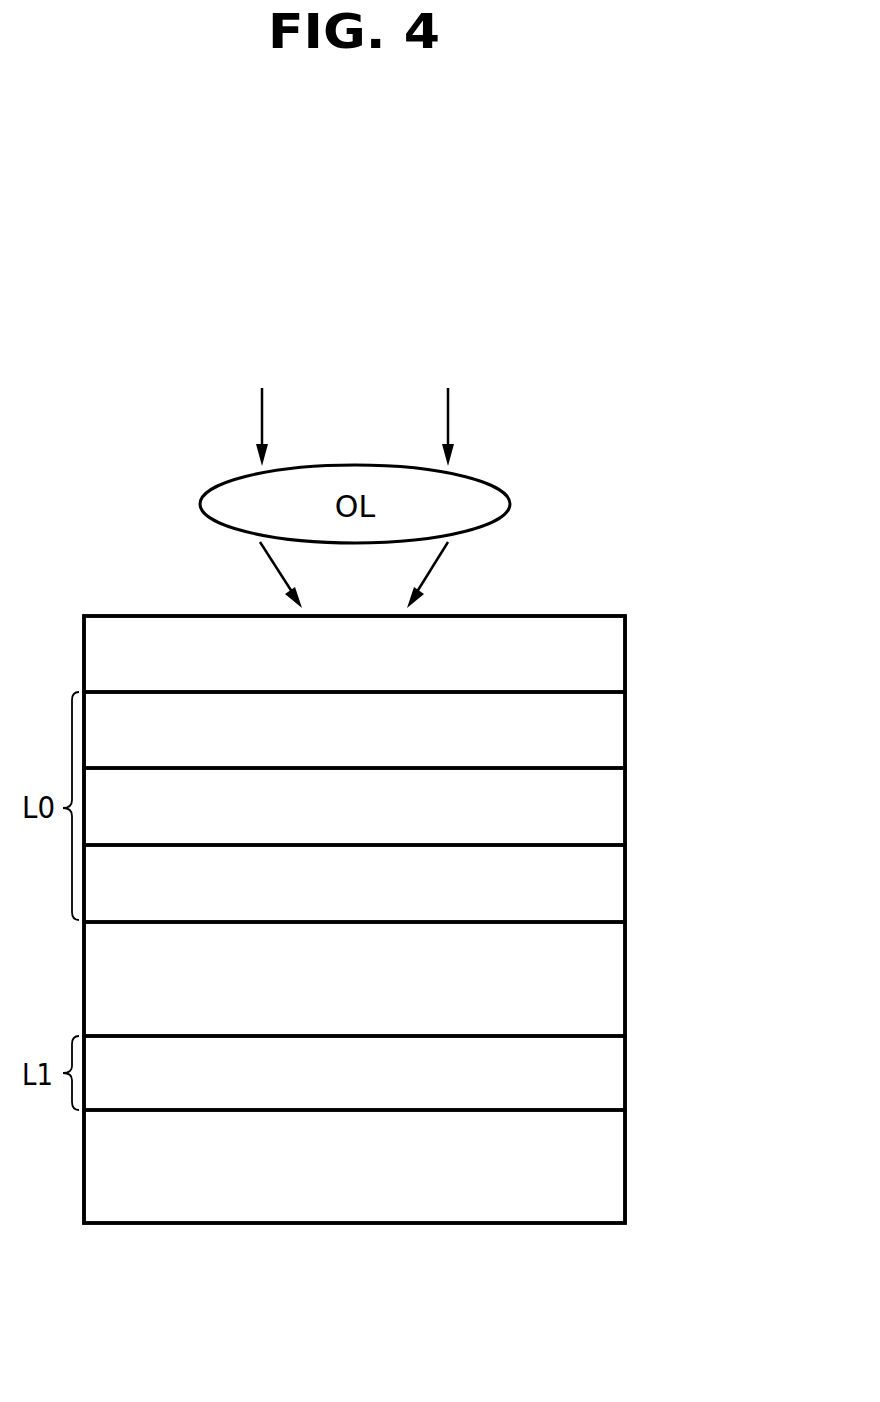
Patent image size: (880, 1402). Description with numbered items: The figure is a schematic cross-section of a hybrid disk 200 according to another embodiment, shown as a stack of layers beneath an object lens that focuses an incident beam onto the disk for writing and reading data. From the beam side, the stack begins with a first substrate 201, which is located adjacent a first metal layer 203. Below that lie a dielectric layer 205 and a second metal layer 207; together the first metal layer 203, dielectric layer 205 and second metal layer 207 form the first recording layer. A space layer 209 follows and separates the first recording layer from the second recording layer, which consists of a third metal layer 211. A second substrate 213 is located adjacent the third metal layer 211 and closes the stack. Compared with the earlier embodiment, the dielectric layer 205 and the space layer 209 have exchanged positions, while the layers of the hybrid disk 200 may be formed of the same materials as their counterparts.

The hybrid disk 200 is at (618, 530).
The first substrate 201 is at (617, 657).
The first metal layer 203 is at (617, 733).
The dielectric layer 205 is at (617, 809).
The second metal layer 207 is at (617, 882).
The space layer 209 is at (617, 975).
The third metal layer 211 is at (617, 1065).
The second substrate 213 is at (617, 1158).